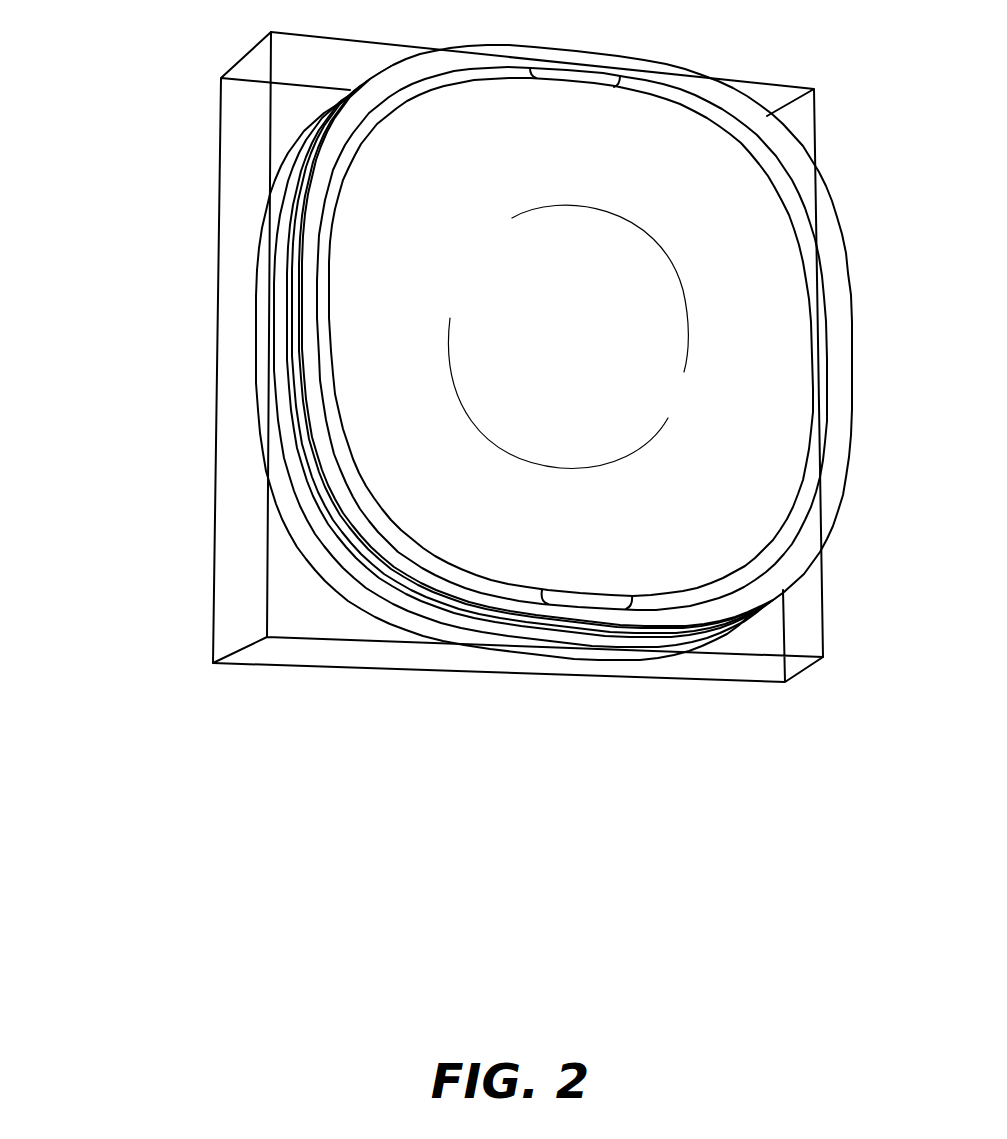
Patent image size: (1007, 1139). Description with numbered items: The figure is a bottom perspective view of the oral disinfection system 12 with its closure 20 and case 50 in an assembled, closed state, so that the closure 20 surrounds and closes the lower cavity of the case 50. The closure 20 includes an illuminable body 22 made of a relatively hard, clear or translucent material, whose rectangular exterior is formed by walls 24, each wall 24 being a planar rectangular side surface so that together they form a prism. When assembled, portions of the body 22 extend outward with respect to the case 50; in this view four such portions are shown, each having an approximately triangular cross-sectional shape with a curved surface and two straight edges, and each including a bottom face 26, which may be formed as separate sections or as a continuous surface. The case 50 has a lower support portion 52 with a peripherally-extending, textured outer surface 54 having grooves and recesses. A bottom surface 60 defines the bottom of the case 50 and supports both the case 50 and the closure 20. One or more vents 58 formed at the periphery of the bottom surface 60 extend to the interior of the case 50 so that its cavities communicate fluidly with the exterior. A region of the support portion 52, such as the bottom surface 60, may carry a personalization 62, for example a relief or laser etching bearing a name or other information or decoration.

The oral disinfection system 12 is at (104, 84).
The closure 20 is at (166, 276).
The illuminable body 22 is at (232, 156).
The walls 24 is at (767, 672).
The bottom face 26 is at (803, 120).
The case 50 is at (900, 401).
The support portion 52 is at (325, 462).
The outer surface 54 is at (330, 520).
The vents 58 is at (592, 77).
The bottom surface 60 is at (782, 295).
The personalization 62 is at (682, 332).